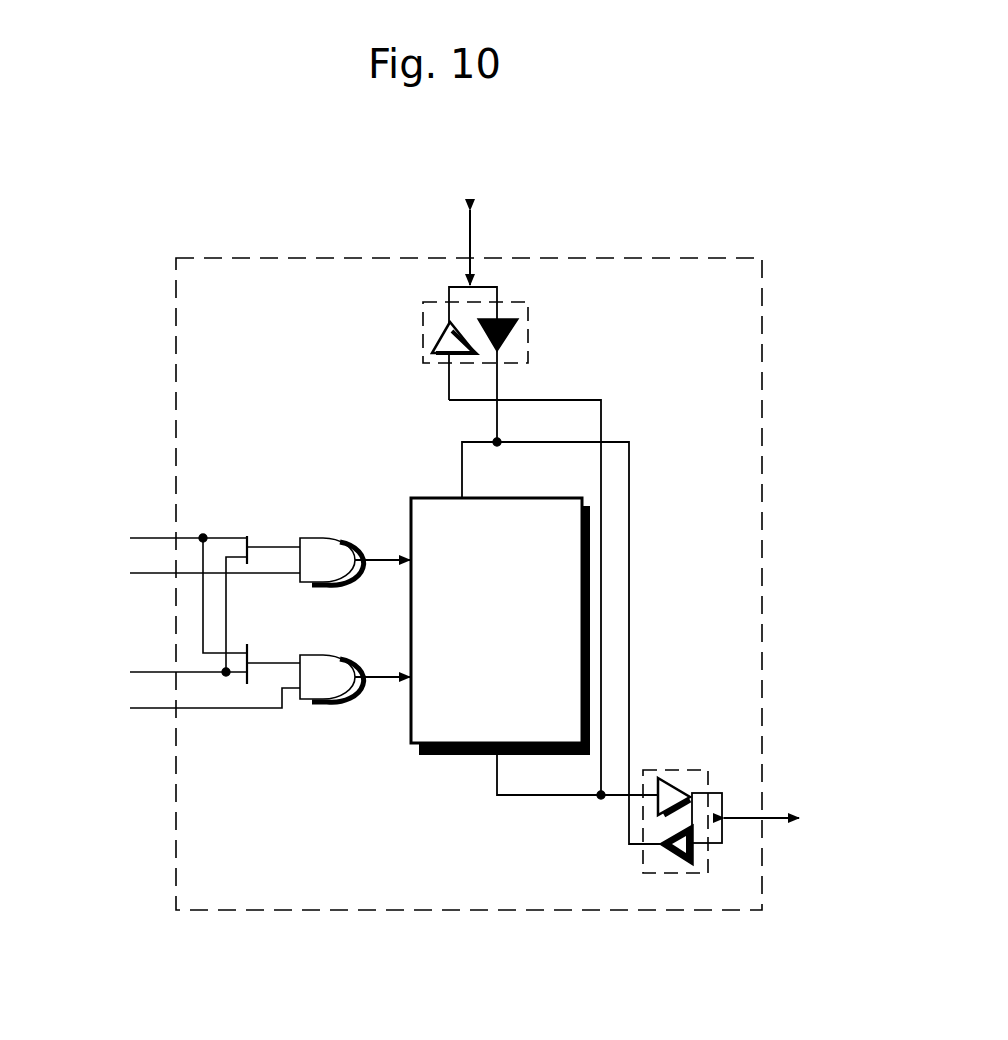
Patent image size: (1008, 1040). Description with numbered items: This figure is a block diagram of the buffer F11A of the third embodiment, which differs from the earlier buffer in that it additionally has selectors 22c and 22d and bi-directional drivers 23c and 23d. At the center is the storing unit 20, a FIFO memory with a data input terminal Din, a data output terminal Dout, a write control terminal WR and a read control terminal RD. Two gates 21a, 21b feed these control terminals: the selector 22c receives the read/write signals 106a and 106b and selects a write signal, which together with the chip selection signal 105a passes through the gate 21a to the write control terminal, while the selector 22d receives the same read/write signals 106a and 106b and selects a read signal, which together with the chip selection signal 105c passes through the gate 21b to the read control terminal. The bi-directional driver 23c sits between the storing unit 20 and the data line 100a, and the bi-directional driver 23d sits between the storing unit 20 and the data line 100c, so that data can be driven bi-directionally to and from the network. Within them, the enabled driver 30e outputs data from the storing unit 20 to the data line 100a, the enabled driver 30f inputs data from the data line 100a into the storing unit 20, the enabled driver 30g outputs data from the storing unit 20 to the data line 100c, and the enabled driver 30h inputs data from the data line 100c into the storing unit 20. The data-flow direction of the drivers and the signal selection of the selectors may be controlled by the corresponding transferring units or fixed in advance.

The buffer F11A is at (267, 910).
The data line 100a is at (475, 230).
The data line 100c is at (805, 822).
The bi-directional driver 23c is at (531, 306).
The bi-directional driver 23d is at (690, 873).
The driver 30e is at (441, 333).
The driver 30f is at (505, 340).
The driver 30g is at (673, 778).
The driver 30h is at (670, 850).
The storing unit 20 is at (590, 590).
The gate 21a is at (318, 538).
The gate 21b is at (333, 634).
The selector 22c is at (246, 535).
The selector 22d is at (247, 685).
The read/write signal 106a is at (146, 534).
The chip selection signal 105a is at (172, 577).
The read/write signal 106b is at (146, 666).
The chip selection signal 105c is at (172, 707).